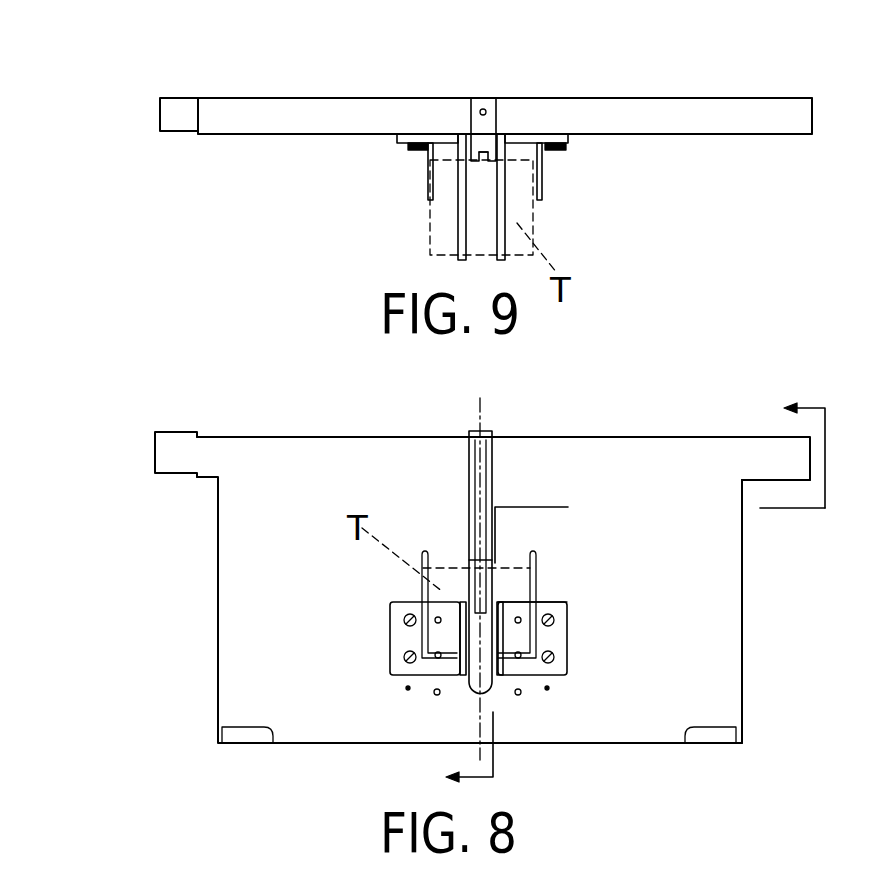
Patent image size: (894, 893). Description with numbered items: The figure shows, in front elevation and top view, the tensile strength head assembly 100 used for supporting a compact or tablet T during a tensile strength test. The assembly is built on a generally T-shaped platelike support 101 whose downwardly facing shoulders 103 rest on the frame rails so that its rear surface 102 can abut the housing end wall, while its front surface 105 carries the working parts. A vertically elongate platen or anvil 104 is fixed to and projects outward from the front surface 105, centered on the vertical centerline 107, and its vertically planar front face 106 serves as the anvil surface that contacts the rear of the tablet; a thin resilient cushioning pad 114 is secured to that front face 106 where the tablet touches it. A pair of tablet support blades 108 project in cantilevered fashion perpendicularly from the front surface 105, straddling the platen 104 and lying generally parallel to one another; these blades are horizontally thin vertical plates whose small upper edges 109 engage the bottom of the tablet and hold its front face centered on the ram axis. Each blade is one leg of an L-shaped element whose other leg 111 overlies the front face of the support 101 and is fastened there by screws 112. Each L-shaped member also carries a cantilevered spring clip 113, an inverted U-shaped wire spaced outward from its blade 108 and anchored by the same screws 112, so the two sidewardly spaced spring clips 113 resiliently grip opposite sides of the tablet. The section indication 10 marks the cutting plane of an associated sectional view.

In FIG. 8, the section line 10- 10 is at (617, 593).
In FIG. 9, the tensile strength head assembly 100 is at (246, 177).
In FIG. 8, the tensile strength head assembly 100 is at (190, 595).
In FIG. 9, the T-shaped platelike support 101 is at (250, 134).
In FIG. 8, the T-shaped platelike support 101 is at (233, 660).
In FIG. 9, the rear surface 102 is at (310, 97).
In FIG. 8, the downwardly facing shoulders 103 is at (167, 475).
In FIG. 9, the platen 104 is at (490, 133).
In FIG. 8, the platen 104 is at (488, 465).
In FIG. 9, the front surface 105 is at (703, 136).
In FIG. 8, the front surface 105 is at (728, 530).
In FIG. 9, the front face 106 is at (488, 160).
In FIG. 8, the vertical centerline 107 is at (477, 485).
In FIG. 9, the tablet support blades 108 is at (457, 197).
In FIG. 8, the tablet support blades 108 is at (452, 664).
In FIG. 8, the upper edges 109 is at (537, 593).
In FIG. 9, the legs 111 is at (427, 150).
In FIG. 8, the legs 111 is at (388, 641).
In FIG. 9, the screws 112 is at (410, 148).
In FIG. 8, the screws 112 is at (560, 601).
In FIG. 9, the spring clip 113 is at (427, 178).
In FIG. 8, the spring clip 113 is at (532, 556).
In FIG. 9, the resilient cushioning pad 114 is at (453, 145).
In FIG. 8, the resilient cushioning pad 114 is at (470, 573).